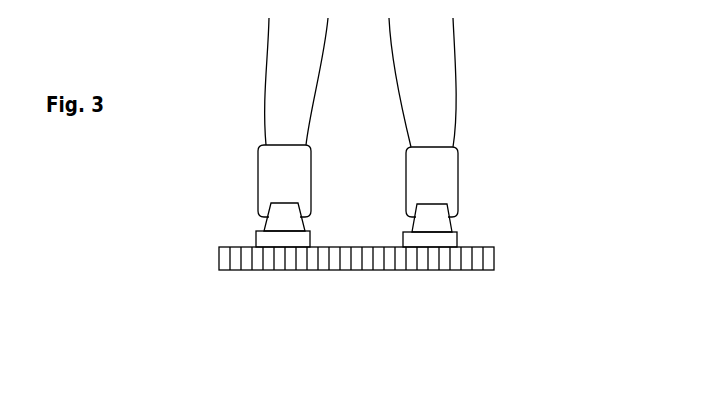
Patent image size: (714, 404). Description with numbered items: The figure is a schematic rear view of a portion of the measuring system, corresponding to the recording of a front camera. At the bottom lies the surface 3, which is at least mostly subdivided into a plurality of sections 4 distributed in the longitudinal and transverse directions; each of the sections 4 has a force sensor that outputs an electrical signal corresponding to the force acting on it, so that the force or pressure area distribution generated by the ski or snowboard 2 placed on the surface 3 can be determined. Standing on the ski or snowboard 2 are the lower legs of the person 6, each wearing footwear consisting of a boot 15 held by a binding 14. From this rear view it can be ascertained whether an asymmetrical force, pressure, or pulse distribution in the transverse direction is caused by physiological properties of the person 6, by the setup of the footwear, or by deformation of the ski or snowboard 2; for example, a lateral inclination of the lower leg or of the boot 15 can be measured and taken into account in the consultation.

The person 6 is at (427, 67).
The boot 15 is at (445, 170).
The binding 14 is at (442, 226).
The ski or snowboard 2 is at (443, 240).
The surface 3 is at (228, 246).
The sections 4 is at (357, 262).